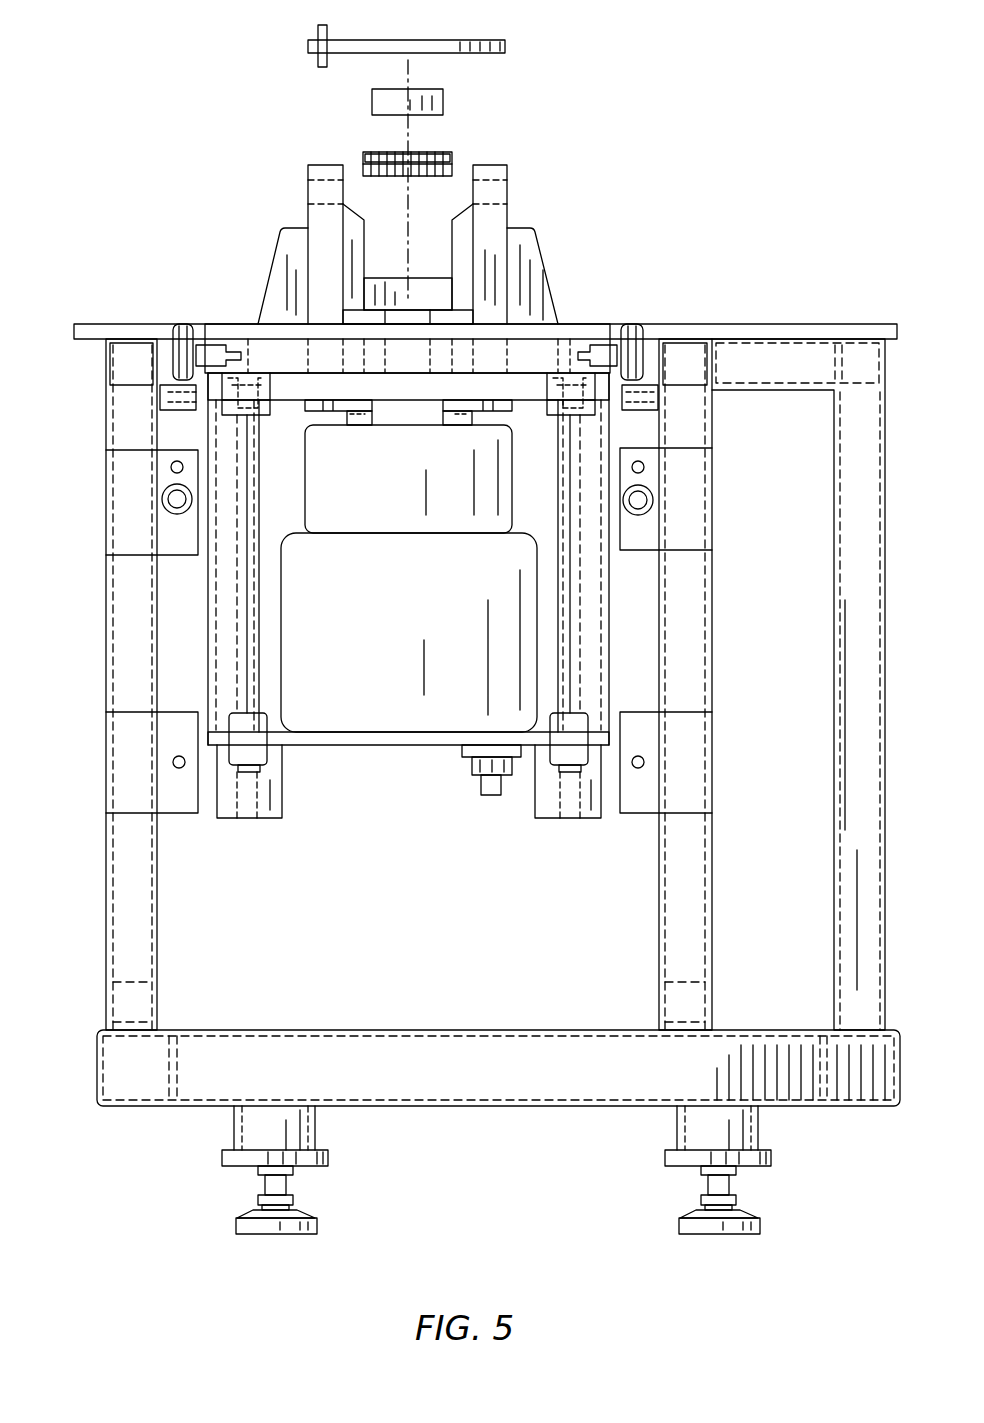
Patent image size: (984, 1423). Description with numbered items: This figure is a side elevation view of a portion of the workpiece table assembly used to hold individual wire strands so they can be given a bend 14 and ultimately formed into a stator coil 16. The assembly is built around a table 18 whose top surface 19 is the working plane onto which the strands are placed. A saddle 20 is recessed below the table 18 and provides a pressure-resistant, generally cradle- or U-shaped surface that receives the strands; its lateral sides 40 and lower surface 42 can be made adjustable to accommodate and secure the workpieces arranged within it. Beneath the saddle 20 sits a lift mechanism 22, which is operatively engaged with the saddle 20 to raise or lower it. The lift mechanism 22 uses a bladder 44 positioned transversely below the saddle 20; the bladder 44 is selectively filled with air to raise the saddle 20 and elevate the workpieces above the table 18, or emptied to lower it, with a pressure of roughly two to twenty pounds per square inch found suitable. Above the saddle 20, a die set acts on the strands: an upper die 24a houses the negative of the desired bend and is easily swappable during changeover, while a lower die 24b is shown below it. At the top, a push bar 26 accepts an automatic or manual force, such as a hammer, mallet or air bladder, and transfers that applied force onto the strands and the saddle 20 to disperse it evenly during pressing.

The bend 14 is at (452, 163).
The stator coil 16 is at (446, 151).
The table 18 is at (122, 420).
The top surface 19 is at (795, 322).
The saddle 20 is at (490, 215).
The lift mechanism 22 is at (335, 782).
The upper die 24a is at (372, 101).
The lower die 24b is at (400, 285).
The push bar 26 is at (308, 44).
The lateral sides 40 is at (490, 257).
The lower surface 42 is at (465, 318).
The bladder 44 is at (454, 694).